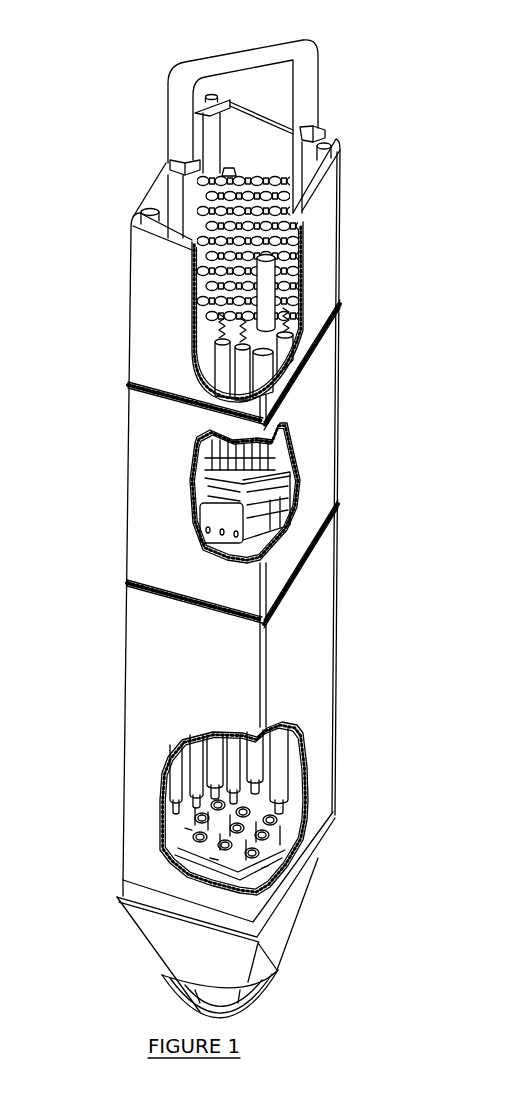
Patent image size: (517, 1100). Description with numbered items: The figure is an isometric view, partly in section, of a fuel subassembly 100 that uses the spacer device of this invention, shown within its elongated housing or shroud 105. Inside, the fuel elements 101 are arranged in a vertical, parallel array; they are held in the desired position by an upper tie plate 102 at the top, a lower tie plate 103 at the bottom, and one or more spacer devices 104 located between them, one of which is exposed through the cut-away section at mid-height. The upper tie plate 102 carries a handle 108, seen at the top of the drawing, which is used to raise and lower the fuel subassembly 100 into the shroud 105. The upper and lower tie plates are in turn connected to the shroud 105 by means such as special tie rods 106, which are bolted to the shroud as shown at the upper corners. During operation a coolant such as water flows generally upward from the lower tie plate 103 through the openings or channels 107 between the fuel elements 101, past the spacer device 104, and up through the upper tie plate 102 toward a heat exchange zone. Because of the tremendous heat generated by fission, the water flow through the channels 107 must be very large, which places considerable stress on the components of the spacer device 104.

The fuel assembly 100 is at (382, 373).
The fuel elements 101 is at (173, 807).
The upper tie plate 102 is at (293, 282).
The lower tie plate 103 is at (180, 863).
The spacer device 104 is at (287, 487).
The housing 105 is at (137, 463).
The tie rods 106 is at (132, 216).
The channels 107 is at (265, 760).
The handle 108 is at (238, 53).